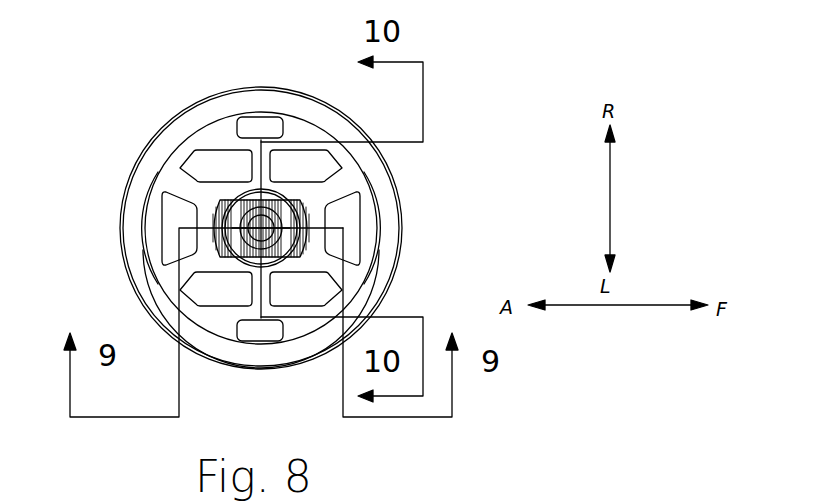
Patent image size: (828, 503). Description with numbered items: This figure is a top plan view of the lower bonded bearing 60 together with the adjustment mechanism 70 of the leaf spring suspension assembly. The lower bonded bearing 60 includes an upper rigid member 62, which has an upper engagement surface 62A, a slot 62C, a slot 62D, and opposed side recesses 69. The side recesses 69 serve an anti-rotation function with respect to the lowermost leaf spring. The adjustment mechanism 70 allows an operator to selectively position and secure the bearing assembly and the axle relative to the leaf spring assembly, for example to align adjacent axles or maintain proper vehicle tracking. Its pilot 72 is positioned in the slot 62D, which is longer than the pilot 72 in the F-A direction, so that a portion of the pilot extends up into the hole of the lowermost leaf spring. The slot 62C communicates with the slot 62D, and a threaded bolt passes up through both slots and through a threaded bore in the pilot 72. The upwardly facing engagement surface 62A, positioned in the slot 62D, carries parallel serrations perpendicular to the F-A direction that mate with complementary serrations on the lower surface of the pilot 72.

The lower bonded bearing 60 is at (490, 153).
The upper rigid member 62 is at (372, 198).
The upper engagement surface 62A is at (172, 168).
The slot 62C is at (300, 262).
The slot 62D is at (215, 262).
The side recesses 69 is at (262, 128).
The adjustment mechanism 70 is at (287, 262).
The pilot 72 is at (273, 205).